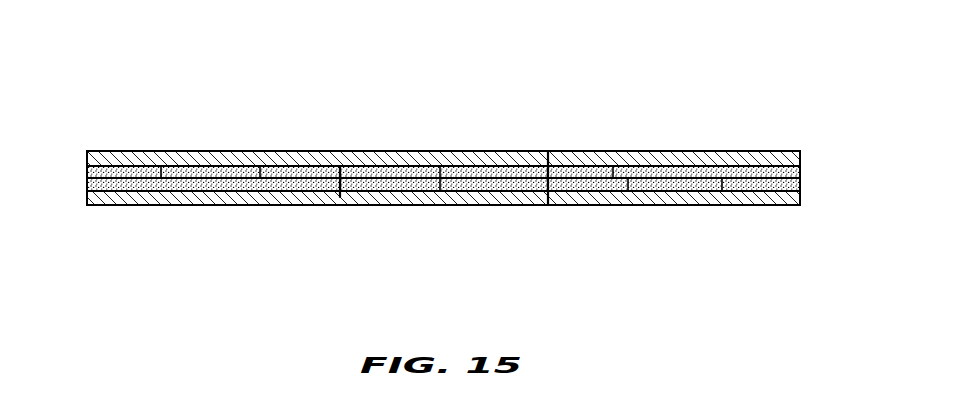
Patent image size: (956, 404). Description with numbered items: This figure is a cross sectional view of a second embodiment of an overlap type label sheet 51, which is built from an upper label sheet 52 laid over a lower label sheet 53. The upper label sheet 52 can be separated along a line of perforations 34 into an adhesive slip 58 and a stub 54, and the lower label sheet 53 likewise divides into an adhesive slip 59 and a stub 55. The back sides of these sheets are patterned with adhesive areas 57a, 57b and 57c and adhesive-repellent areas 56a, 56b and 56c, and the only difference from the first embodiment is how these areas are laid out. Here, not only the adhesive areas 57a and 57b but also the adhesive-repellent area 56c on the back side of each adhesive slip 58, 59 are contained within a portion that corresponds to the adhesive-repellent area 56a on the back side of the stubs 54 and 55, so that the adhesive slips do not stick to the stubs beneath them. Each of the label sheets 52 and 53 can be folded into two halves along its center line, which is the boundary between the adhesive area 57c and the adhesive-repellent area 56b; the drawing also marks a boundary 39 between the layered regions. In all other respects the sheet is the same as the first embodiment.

The overlap type label sheet 51 is at (727, 90).
The upper label sheet 52 is at (767, 151).
The lower label sheet 53 is at (757, 205).
The stub 54 is at (672, 160).
The stub 55 is at (212, 205).
The adhesive-repellent area 56a is at (613, 172).
The adhesive-repellent area 56b is at (380, 172).
The adhesive-repellent area 56c is at (223, 172).
The adhesive area 57a is at (110, 172).
The adhesive area 57b is at (300, 185).
The adhesive area 57c is at (480, 185).
The adhesive slip 58 is at (166, 158).
The adhesive slip 59 is at (612, 205).
The line of perforations 34 is at (548, 160).
The boundary 39 is at (340, 197).